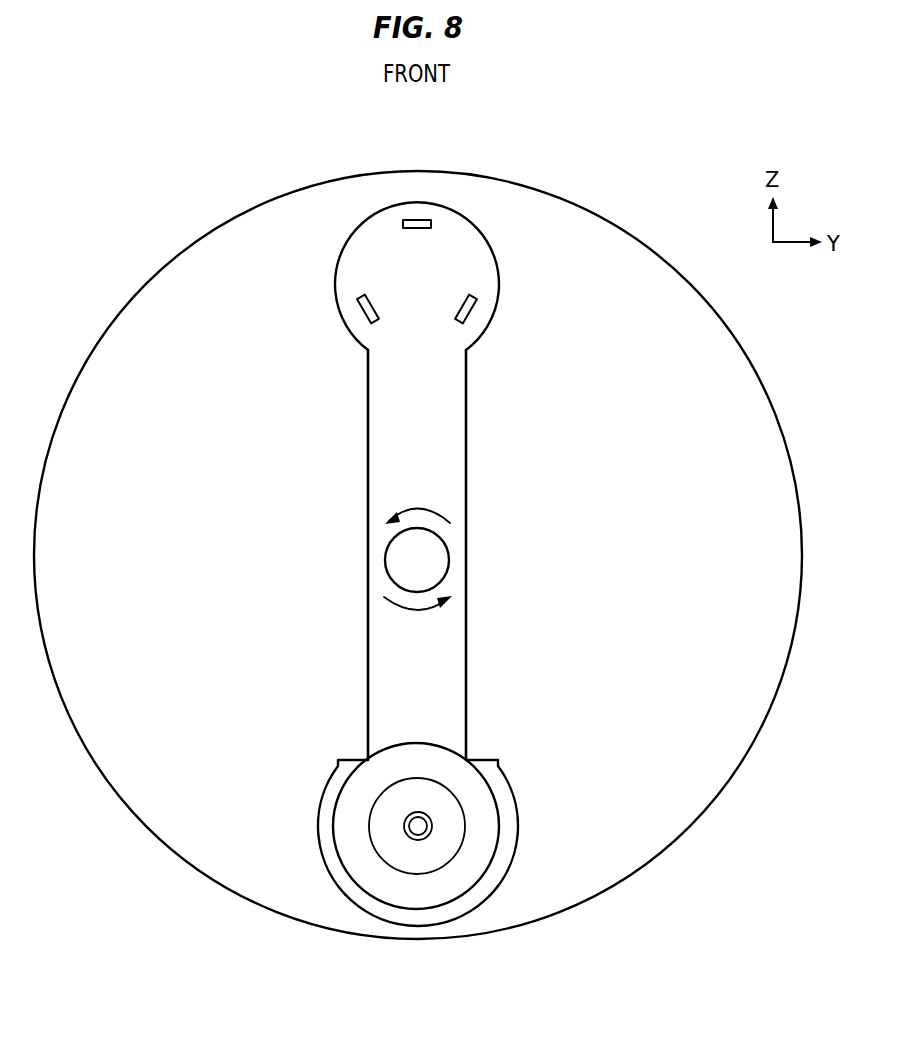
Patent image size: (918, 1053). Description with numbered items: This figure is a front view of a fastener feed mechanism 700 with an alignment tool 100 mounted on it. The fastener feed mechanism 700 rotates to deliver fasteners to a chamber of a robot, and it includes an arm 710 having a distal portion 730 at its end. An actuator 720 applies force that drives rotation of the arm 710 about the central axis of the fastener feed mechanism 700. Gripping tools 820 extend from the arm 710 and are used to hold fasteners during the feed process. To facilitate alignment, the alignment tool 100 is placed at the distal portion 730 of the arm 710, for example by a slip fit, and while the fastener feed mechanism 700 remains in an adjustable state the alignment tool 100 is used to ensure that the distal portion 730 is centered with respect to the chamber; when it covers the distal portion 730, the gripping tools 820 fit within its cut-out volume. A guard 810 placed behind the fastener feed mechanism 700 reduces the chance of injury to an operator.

The alignment tool 100 is at (552, 815).
The fastener feed mechanism 700 is at (492, 532).
The arm 710 is at (368, 418).
The actuator 720 is at (387, 546).
The distal portion 730 is at (343, 318).
The guard 810 is at (159, 841).
The gripping tool 820 is at (427, 222).